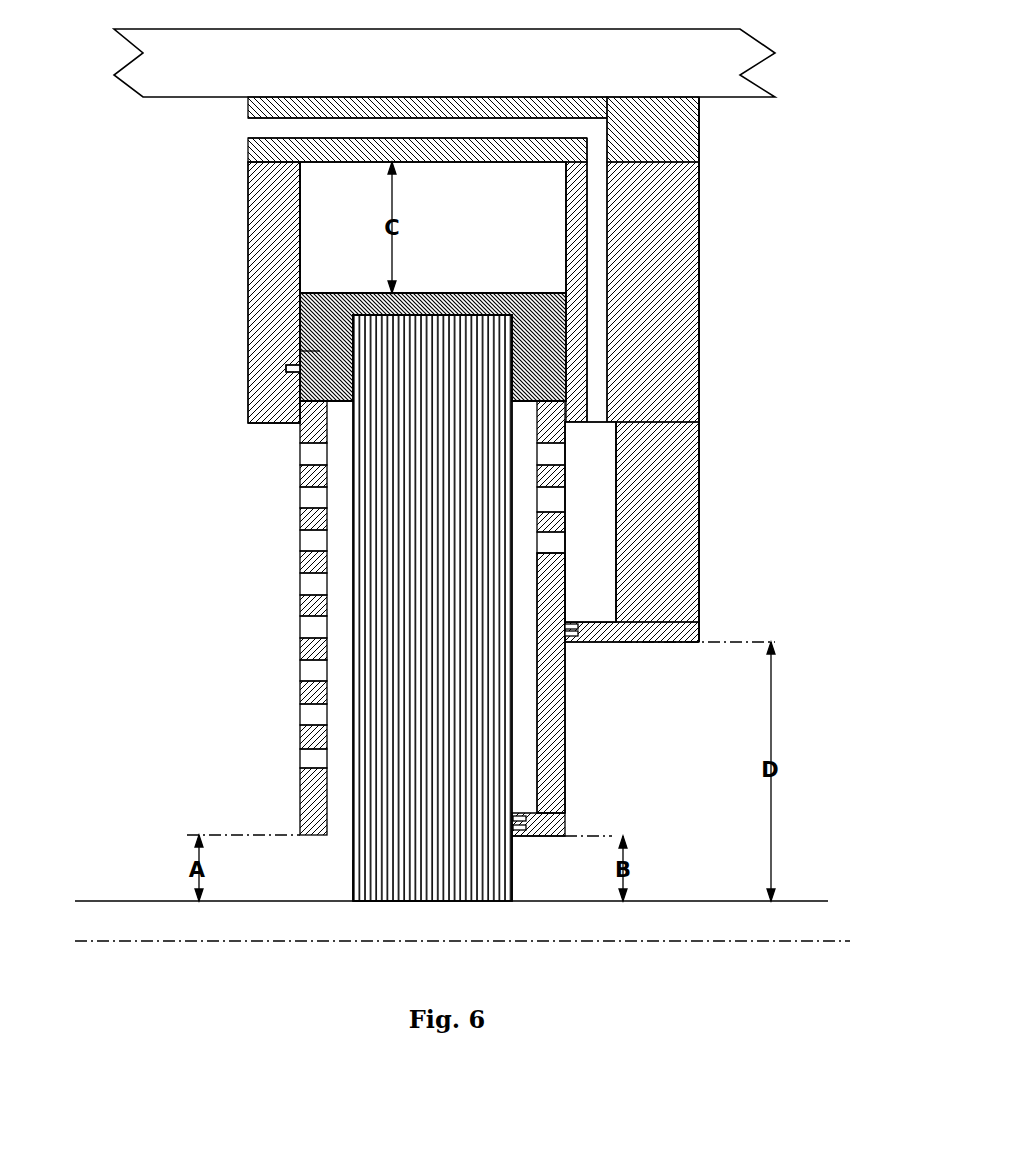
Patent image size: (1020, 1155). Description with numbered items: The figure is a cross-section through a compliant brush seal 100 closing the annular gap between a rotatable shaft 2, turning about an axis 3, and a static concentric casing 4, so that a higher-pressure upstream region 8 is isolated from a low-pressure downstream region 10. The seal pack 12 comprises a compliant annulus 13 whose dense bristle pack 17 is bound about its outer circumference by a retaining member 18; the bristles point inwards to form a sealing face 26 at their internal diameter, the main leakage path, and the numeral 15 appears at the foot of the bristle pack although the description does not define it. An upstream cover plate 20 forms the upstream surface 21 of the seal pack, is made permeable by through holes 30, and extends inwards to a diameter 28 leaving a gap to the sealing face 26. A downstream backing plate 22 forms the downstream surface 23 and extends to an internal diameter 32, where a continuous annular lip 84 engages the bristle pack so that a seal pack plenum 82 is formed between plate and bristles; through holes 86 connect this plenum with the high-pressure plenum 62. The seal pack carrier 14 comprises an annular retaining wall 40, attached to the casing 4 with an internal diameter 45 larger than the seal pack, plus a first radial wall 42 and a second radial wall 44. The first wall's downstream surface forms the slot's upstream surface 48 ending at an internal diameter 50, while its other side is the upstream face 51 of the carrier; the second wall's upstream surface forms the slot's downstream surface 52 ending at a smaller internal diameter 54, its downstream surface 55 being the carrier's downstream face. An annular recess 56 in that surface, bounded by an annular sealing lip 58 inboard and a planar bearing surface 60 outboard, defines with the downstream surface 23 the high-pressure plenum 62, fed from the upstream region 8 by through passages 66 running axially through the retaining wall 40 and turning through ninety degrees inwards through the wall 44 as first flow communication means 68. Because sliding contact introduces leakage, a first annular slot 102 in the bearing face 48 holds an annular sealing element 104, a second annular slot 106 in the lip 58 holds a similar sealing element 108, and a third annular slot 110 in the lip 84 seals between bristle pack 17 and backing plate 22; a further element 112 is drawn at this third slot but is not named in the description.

The rotatable shaft 2 is at (800, 901).
The axis 3 is at (605, 941).
The casing 4 is at (740, 42).
The upstream region 8 is at (97, 367).
The downstream region 10 is at (802, 465).
The seal pack 12 is at (565, 797).
The compliant annulus 13 is at (357, 870).
The seal pack carrier 14 is at (700, 572).
The body bottom 15 is at (358, 901).
The bristle pack 17 is at (410, 901).
The retaining member 18 is at (285, 371).
The cover plate 20 is at (300, 557).
The upstream surface 21 is at (300, 680).
The backing plate 22 is at (565, 738).
The downstream surface 23 is at (565, 768).
The sealing face 26 is at (460, 901).
The diameter 28 is at (315, 835).
The through holes 30 is at (310, 757).
The internal diameter 32 is at (537, 838).
The retaining wall 40 is at (700, 143).
The first radial wall 42 is at (254, 350).
The second radial wall 44 is at (700, 422).
The internal diameter 45 is at (358, 162).
The upstream slot surface 48 is at (302, 290).
The internal diameter 50 is at (275, 423).
The upstream face 51 is at (248, 290).
The downstream slot surface 52 is at (566, 203).
The internal diameter 54 is at (680, 644).
The downstream surface 55 is at (700, 232).
The annular recess 56 is at (600, 527).
The annular sealing lip 58 is at (588, 644).
The annular planar bearing surface 60 is at (540, 290).
The high-pressure plenum 62 is at (590, 522).
The through passages 66 is at (258, 128).
The first flow communication means 68 is at (462, 123).
The seal pack plenum 82 is at (524, 688).
The annular lip 84 is at (517, 837).
The through holes 86 is at (555, 497).
The seal 100 is at (718, 333).
The first annular slot 102 is at (300, 352).
The annular sealing element 104 is at (290, 373).
The second annular slot 106 is at (575, 627).
The annular sealing element 108 is at (580, 633).
The third annular slot 110 is at (563, 802).
The seal 112 is at (563, 822).